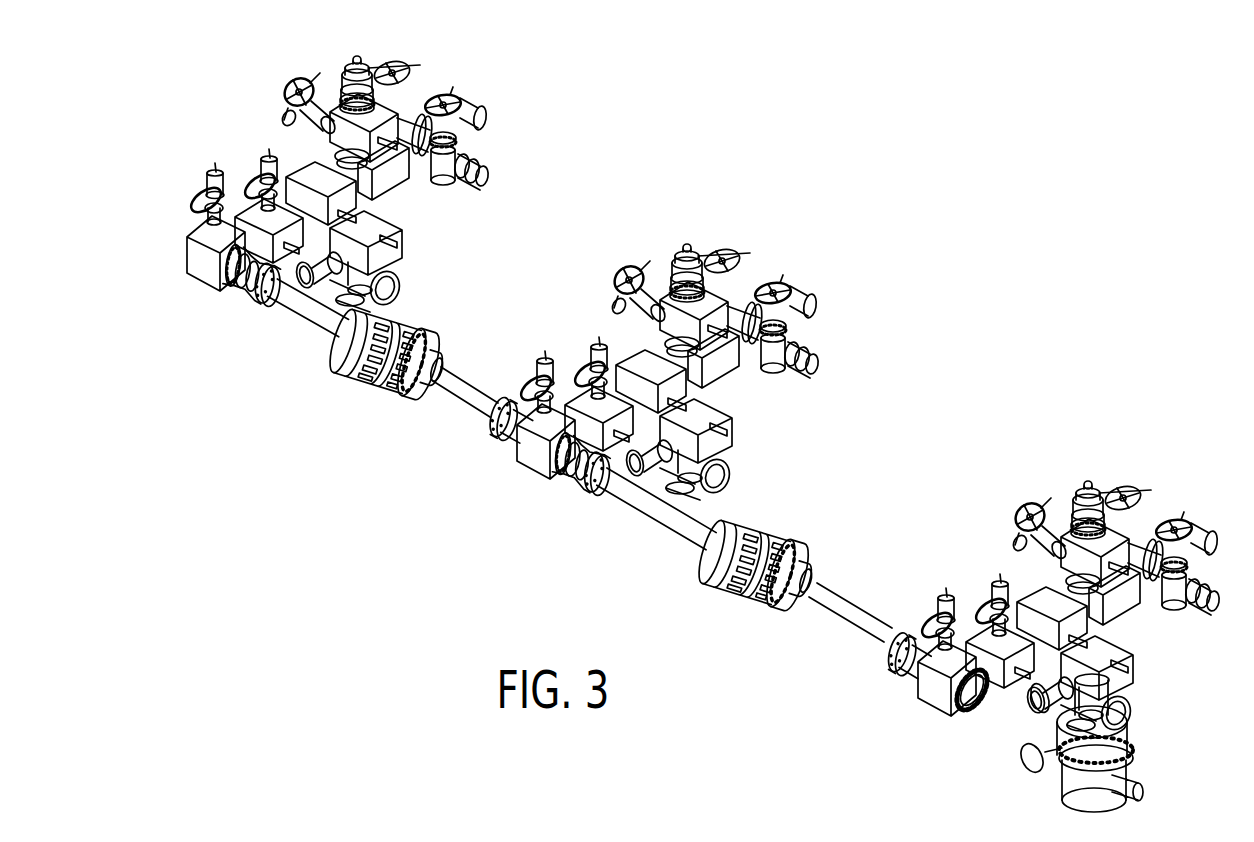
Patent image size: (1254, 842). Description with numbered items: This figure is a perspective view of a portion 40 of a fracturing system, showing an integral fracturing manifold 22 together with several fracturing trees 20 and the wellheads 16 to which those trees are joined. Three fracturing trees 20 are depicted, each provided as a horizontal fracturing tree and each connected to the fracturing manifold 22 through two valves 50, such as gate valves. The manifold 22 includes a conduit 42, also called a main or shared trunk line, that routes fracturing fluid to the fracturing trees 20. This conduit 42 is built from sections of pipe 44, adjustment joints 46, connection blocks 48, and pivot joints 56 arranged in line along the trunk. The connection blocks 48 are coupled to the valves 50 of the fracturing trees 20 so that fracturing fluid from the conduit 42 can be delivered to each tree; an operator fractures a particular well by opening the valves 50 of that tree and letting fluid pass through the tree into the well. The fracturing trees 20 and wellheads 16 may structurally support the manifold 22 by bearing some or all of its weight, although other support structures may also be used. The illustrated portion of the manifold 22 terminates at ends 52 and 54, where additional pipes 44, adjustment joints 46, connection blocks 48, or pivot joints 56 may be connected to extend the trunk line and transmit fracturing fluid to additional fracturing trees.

The wellhead 16 is at (370, 267).
The fracturing tree 20 is at (393, 182).
The fracturing manifold 22 is at (508, 504).
The portion 40 is at (1028, 148).
The conduit 42 is at (357, 393).
The pipe 44 is at (297, 303).
The adjustment joint 46 is at (340, 348).
The connection block 48 is at (203, 275).
The valve 50 is at (247, 210).
The end 52 is at (970, 728).
The end 54 is at (170, 235).
The pivot joint 56 is at (258, 295).